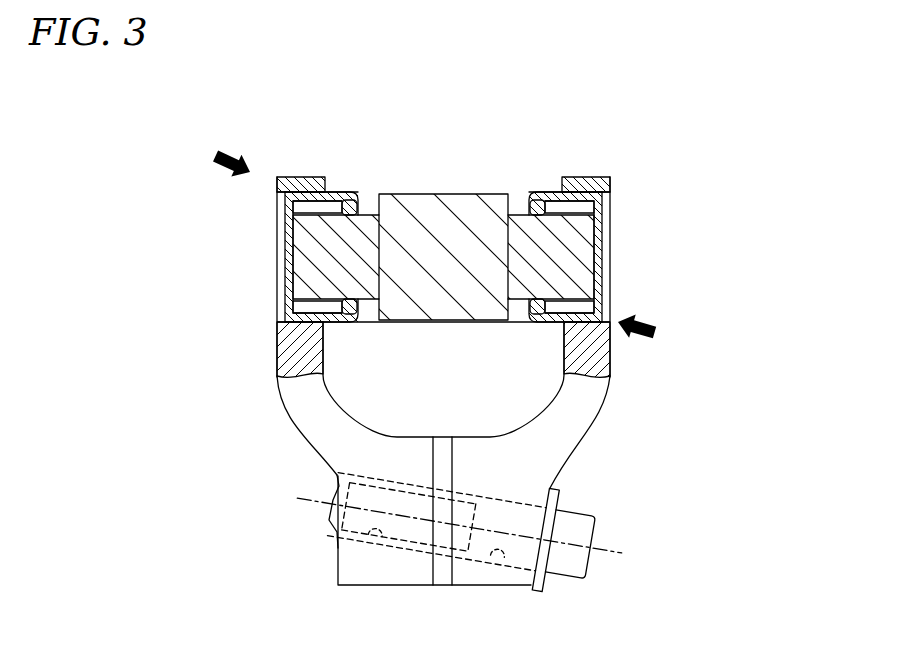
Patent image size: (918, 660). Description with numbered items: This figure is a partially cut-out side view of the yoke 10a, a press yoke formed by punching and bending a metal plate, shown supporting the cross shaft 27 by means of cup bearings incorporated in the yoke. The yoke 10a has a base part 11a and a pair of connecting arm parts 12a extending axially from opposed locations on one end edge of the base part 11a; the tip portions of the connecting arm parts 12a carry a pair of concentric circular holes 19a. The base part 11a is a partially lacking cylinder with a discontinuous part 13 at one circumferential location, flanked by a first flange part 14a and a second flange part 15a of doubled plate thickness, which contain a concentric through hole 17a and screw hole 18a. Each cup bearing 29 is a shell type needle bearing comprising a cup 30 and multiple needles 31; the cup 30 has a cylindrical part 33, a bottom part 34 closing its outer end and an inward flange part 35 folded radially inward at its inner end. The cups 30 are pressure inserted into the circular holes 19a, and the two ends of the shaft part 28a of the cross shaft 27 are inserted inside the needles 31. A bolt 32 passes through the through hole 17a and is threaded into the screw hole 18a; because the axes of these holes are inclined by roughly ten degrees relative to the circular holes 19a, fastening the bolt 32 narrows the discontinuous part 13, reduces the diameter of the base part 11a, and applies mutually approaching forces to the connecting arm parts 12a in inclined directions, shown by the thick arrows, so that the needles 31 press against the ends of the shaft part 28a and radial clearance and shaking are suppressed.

The yoke 10a is at (630, 162).
The base part 11a is at (348, 575).
The connecting arm parts 12a is at (287, 347).
The discontinuous part 13 is at (440, 580).
The first flange part 14a is at (515, 490).
The second flange part 15a is at (348, 557).
The through hole 17a is at (499, 565).
The screw hole 18a is at (378, 542).
The circular holes 19a is at (292, 197).
The cross shaft 27 is at (458, 208).
The shaft part 28a is at (573, 280).
The cup bearings 29 is at (280, 235).
The cup 30 is at (280, 300).
The needles 31 is at (313, 208).
The bolt 32 is at (573, 561).
The cylindrical part 33 is at (335, 197).
The bottom part 34 is at (290, 270).
The inward flange part 35 is at (358, 210).